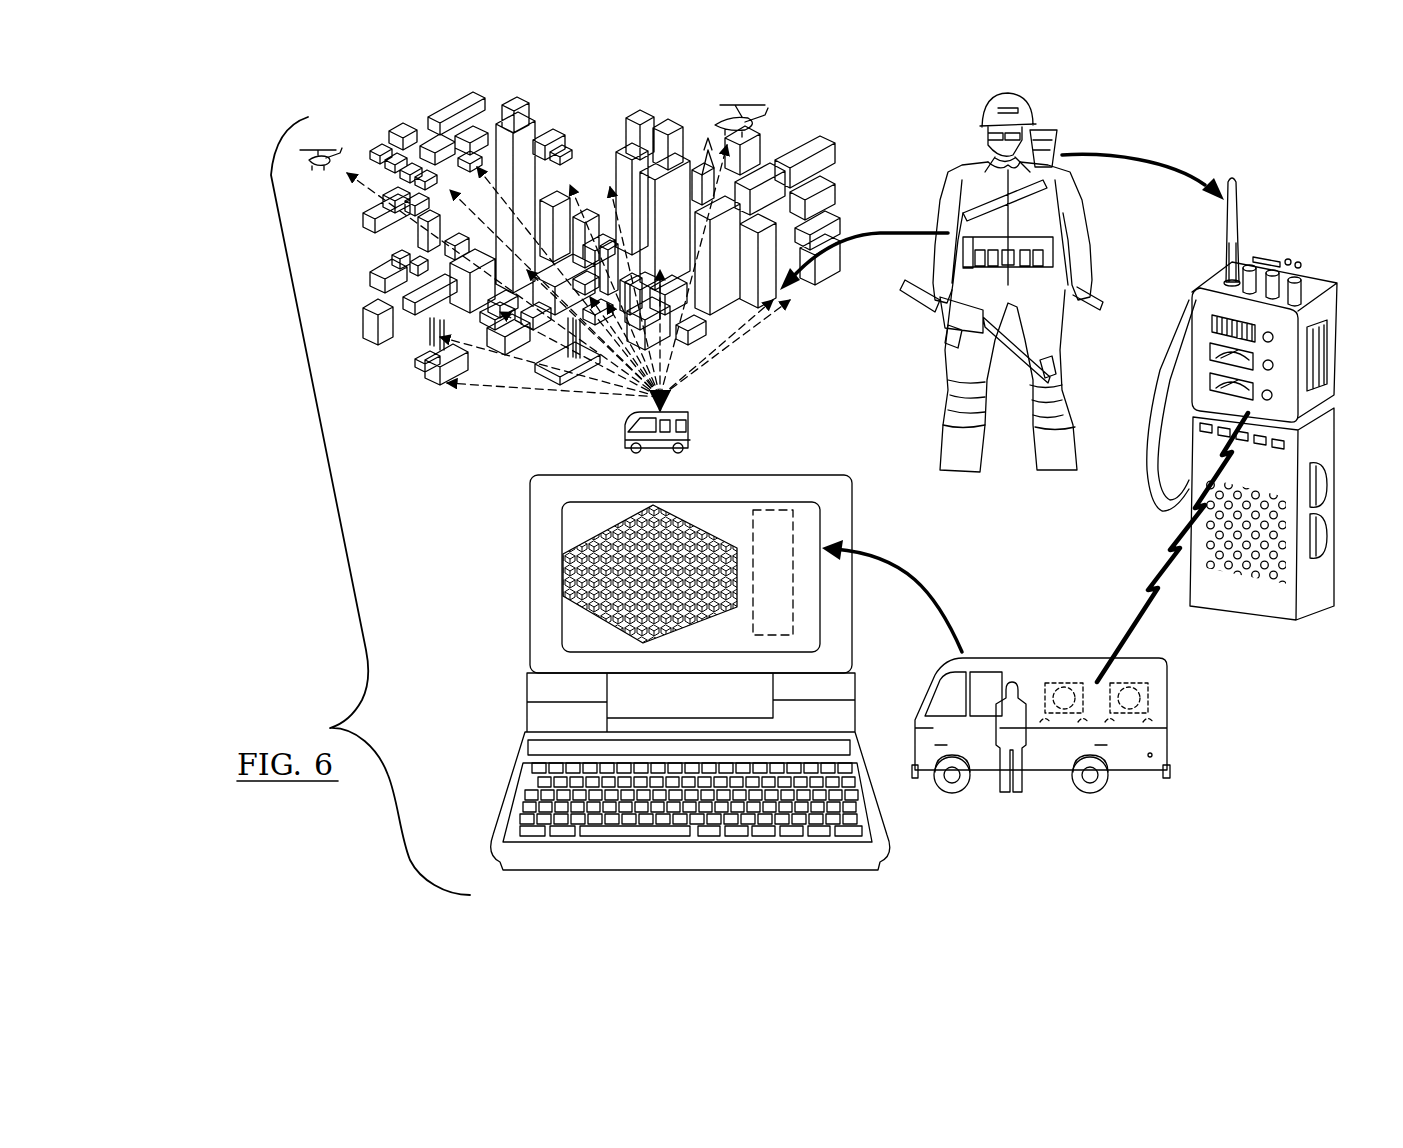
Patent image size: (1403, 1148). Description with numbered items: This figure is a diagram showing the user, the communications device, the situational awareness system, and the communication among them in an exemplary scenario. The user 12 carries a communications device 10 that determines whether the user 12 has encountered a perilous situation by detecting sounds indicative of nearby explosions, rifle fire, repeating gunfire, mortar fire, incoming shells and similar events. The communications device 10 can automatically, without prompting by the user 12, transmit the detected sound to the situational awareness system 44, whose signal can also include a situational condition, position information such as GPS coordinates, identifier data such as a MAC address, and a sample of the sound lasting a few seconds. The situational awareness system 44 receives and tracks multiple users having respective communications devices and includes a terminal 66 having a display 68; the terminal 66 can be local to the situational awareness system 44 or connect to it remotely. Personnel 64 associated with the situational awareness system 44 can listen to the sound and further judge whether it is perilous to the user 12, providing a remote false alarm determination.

The communications device 10 is at (1072, 136).
The user 12 is at (960, 151).
The situational awareness system 44 is at (1170, 741).
The personnel 64 is at (1020, 793).
The terminal 66 is at (520, 618).
The display 68 is at (738, 518).